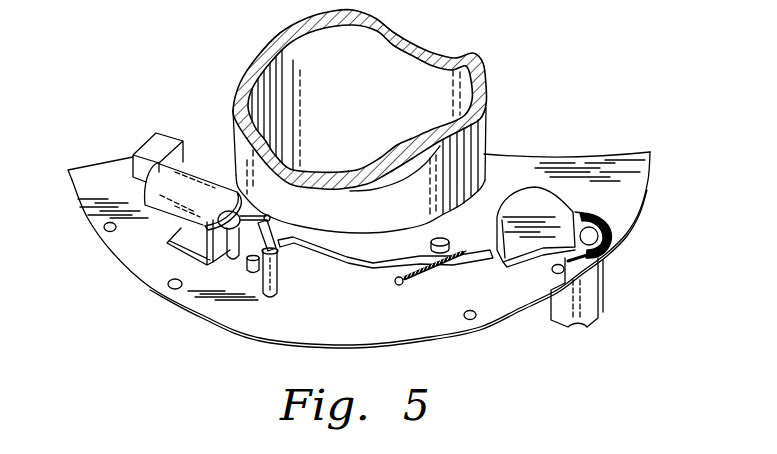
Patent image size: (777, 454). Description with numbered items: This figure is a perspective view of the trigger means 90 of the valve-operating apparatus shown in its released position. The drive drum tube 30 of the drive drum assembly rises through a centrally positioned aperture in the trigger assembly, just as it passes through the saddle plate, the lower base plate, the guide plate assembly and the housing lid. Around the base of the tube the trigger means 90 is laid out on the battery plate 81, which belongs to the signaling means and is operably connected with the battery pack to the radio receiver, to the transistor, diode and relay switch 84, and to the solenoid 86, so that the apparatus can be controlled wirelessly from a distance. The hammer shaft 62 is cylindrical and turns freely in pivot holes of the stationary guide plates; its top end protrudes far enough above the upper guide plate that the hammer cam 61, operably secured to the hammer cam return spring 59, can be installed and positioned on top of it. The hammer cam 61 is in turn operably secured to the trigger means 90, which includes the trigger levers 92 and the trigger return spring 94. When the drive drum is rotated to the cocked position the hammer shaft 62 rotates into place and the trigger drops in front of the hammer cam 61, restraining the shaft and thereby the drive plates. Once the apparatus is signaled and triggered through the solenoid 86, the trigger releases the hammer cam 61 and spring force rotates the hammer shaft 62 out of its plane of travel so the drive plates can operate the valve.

The drive drum tube 30 is at (262, 43).
The hammer cam return spring 59 is at (570, 323).
The hammer cam 61 is at (540, 207).
The hammer shaft 62 is at (598, 290).
The battery plate 81 is at (607, 193).
The transistor, diode and relay switch 84 is at (133, 147).
The solenoid 86 is at (197, 187).
The trigger means 90 is at (143, 327).
The trigger levers 92 is at (367, 262).
The trigger return spring 94 is at (437, 273).